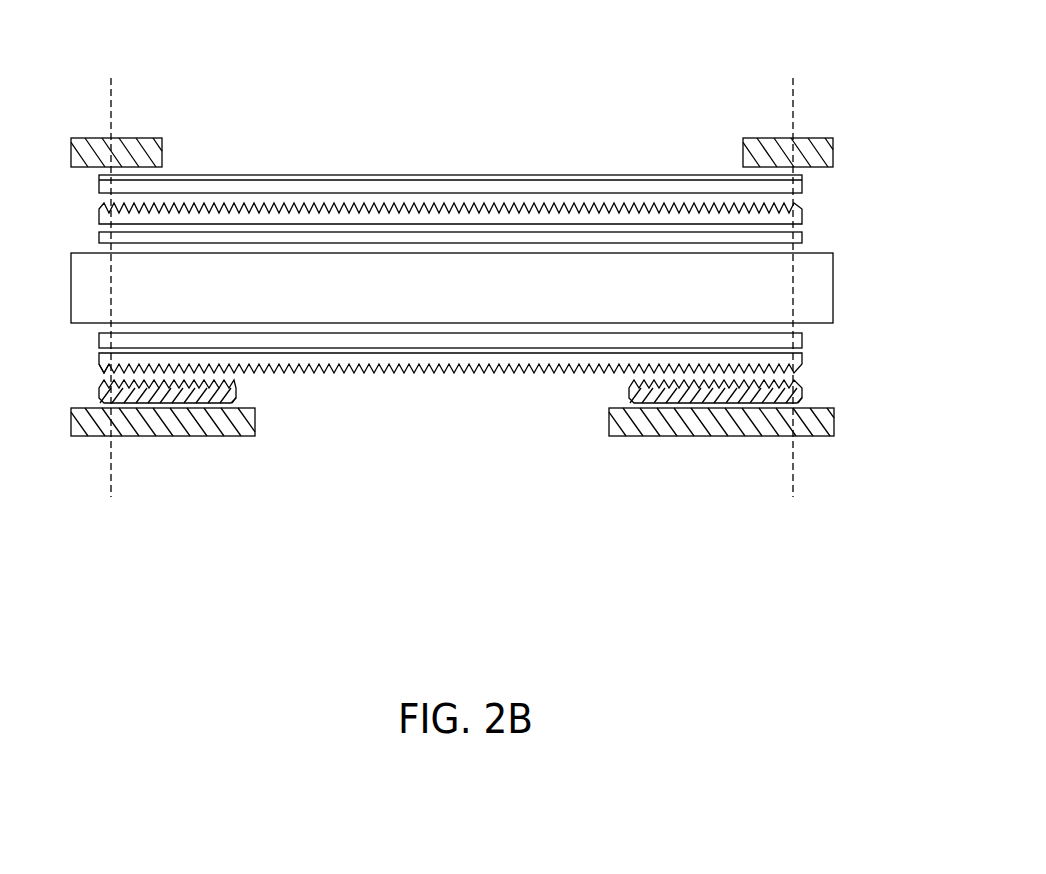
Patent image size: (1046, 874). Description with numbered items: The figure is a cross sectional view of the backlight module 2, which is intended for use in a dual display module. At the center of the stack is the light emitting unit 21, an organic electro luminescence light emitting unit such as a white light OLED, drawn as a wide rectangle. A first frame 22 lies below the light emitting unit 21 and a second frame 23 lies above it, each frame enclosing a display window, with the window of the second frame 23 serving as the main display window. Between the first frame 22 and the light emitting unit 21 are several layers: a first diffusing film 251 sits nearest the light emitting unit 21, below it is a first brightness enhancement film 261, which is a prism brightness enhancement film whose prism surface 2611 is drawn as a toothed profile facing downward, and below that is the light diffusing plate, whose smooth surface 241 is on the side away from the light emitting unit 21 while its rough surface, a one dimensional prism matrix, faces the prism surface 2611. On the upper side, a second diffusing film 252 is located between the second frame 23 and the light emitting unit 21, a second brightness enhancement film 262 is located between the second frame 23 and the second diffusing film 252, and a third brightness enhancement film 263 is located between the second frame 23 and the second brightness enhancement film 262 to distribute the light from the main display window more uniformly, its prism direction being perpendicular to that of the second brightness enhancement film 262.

The backlight module 2 is at (751, 29).
The light emitting unit 21 is at (834, 273).
The first frame 22 is at (802, 436).
The second frame 23 is at (821, 138).
The smooth surface 241 is at (802, 403).
The first diffusing film 251 is at (803, 340).
The second diffusing film 252 is at (803, 238).
The first brightness enhancement film 261 is at (803, 362).
The prism surface 2611 is at (100, 370).
The second brightness enhancement film 262 is at (803, 218).
The third brightness enhancement film 263 is at (803, 188).